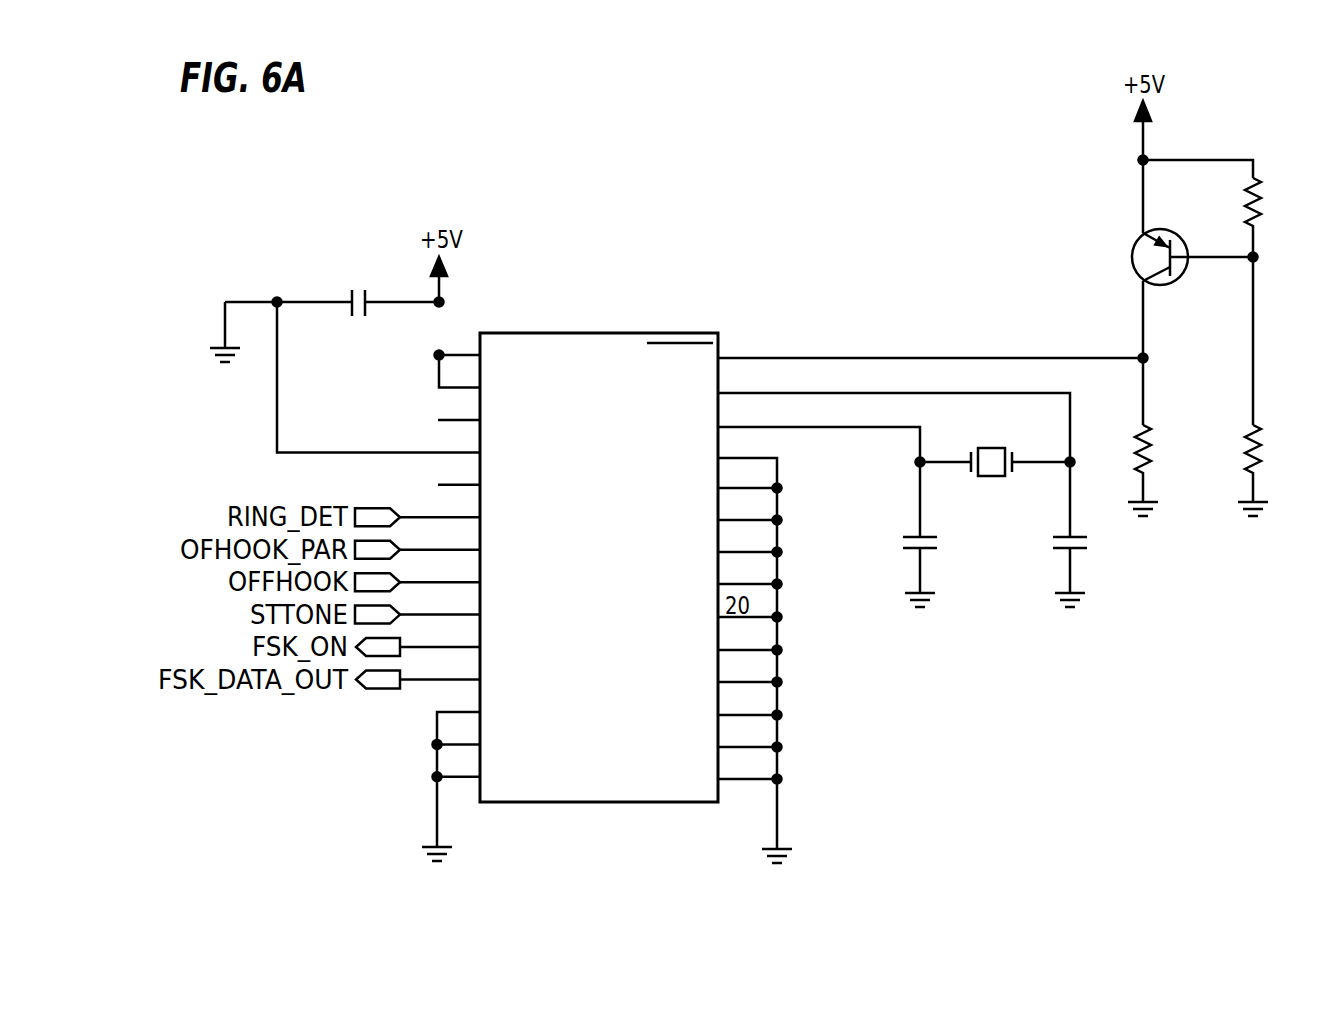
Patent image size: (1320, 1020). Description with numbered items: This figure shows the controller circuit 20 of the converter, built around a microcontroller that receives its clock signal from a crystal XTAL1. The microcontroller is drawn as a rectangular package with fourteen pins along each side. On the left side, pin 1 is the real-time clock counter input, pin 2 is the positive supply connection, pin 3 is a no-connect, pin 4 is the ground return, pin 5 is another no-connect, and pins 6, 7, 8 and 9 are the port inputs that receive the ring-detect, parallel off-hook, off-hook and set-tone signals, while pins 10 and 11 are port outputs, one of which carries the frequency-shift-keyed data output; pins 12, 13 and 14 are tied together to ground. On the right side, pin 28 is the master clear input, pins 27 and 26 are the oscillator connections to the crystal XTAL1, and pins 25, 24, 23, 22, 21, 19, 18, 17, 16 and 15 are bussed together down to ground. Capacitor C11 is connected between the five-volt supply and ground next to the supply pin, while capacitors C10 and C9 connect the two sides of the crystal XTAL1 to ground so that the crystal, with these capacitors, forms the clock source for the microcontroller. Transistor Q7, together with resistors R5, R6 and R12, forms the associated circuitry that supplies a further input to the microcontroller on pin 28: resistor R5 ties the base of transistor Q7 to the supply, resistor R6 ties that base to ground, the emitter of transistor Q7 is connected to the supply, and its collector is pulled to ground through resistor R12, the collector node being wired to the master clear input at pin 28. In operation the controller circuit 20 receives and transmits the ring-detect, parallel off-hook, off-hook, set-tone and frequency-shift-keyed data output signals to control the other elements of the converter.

The controller circuit 20 is at (628, 213).
The pin 1 RTCC 1 is at (458, 344).
The pin 2 VDD 2 is at (459, 373).
The pin 3 NCO 3 is at (459, 408).
The pin 4 VSS 4 is at (378, 378).
The pin 5 NC1 5 is at (459, 473).
The pin 6 RA0 RING_DET 6 is at (417, 508).
The pin 7 RA1 OFHOOK_PAR 7 is at (417, 541).
The pin 8 RA2 OFFHOOK 8 is at (417, 573).
The pin 9 RA3 STTONE 9 is at (417, 606).
The pin 10 RB0 FSK_ON 10 is at (418, 638).
The pin 11 RB1 FSK_DATA_OUT 11 is at (418, 671).
The pin 12 RB2 12 is at (458, 715).
The pin 13 RB3 13 is at (457, 733).
The pin 14 RB4 14 is at (451, 802).
The pin 15 RB5 15 is at (750, 768).
The pin 16 RB6 16 is at (750, 736).
The pin 17 RB7 17 is at (750, 704).
The pin 18 RC0 18 is at (750, 671).
The pin 19 RC1 19 is at (750, 639).
The pin 21 RC3 21 is at (750, 573).
The pin 22 RC4 22 is at (750, 541).
The pin 23 RC5 23 is at (750, 509).
The pin 24 RC6 24 is at (750, 477).
The pin 25 RC7 25 is at (755, 647).
The pin 26 OSC2/OUT 26 is at (819, 431).
The pin 27 OSC1 27 is at (894, 414).
The pin 28 MCLR 28 is at (933, 347).
The capacitor C11 is at (359, 287).
The capacitor C10 is at (901, 534).
The capacitor C9 is at (1081, 534).
The crystal XTAL1 is at (995, 508).
The transistor Q7 is at (1173, 258).
The resistor R5 is at (1271, 301).
The resistor R6 is at (1268, 470).
The resistor R12 is at (1163, 470).